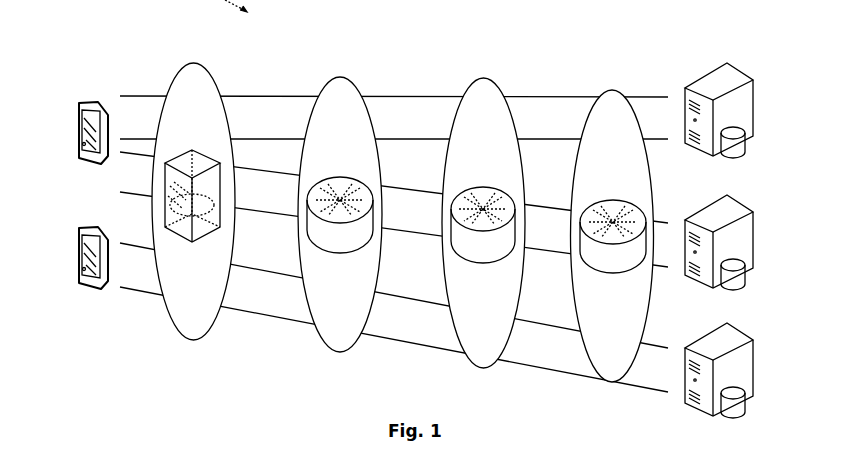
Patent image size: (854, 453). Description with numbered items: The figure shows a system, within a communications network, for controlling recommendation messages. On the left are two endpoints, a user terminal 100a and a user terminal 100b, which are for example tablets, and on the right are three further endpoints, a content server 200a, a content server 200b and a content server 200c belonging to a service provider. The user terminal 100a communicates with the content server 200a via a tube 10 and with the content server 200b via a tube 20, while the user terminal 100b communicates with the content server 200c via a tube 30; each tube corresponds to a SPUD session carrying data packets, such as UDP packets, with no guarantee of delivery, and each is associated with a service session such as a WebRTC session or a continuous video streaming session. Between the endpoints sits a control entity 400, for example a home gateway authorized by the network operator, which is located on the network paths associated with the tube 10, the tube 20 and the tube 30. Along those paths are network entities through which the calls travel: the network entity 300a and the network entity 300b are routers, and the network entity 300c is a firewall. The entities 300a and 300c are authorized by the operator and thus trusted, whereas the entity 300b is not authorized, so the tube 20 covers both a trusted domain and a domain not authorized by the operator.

The tube 10 is at (394, 117).
The tube 20 is at (394, 209).
The tube 30 is at (394, 317).
The user terminal 100a is at (82, 104).
The user terminal 100b is at (82, 229).
The content server 200a is at (742, 70).
The content server 200b is at (742, 202).
The content server 200c is at (742, 330).
The network entity 300a is at (356, 182).
The network entity 300b is at (471, 188).
The network entity 300c is at (636, 270).
The control entity 400 is at (176, 156).